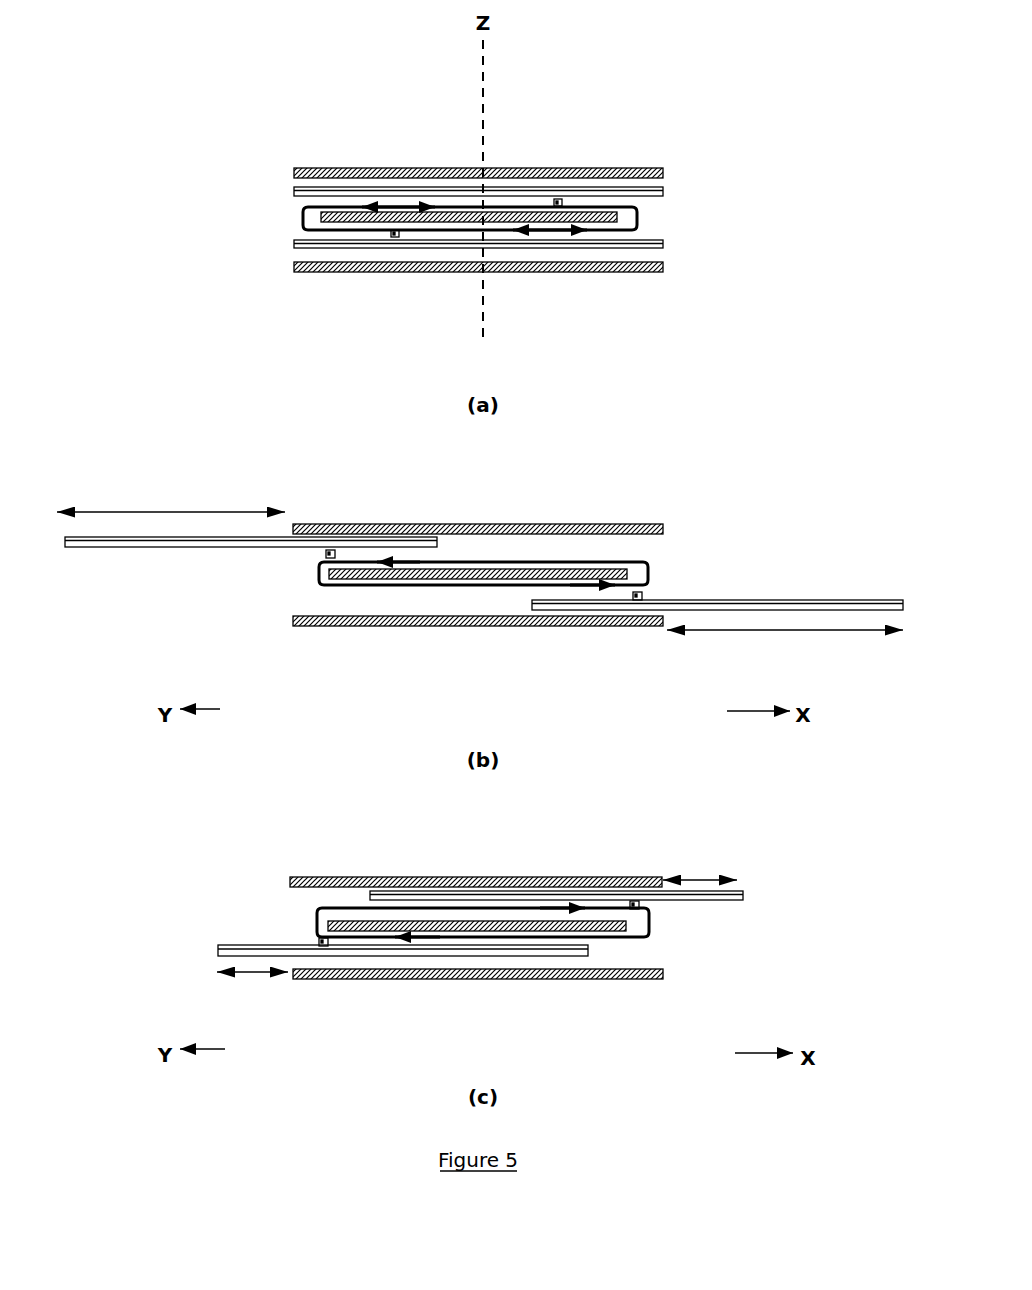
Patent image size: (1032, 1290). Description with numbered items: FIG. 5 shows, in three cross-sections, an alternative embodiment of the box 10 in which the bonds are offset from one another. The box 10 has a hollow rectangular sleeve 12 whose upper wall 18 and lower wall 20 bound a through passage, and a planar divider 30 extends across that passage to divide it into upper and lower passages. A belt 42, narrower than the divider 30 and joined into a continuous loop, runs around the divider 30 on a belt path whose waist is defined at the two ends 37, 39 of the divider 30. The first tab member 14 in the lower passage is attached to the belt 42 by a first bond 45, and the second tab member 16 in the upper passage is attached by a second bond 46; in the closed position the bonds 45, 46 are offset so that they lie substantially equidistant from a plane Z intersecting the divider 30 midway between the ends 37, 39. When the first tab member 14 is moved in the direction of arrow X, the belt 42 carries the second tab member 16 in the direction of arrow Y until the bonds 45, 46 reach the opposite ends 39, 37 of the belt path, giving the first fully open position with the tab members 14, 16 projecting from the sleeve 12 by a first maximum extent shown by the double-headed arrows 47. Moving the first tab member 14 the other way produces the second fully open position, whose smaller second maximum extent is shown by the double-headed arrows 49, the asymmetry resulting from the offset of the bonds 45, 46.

The box 10 is at (262, 158).
The sleeve 12 is at (662, 168).
The first tab member 14 is at (585, 248).
The second tab member 16 is at (294, 193).
The upper wall 18 is at (343, 168).
The lower wall 20 is at (336, 272).
The divider 30 is at (637, 226).
The end of divider 37 is at (303, 222).
The end of divider 39 is at (637, 210).
The belt 42 is at (303, 211).
The first bond 45 is at (397, 238).
The second bond 46 is at (558, 199).
The double-headed arrows 47 is at (107, 512).
The double-headed arrows 49 is at (697, 880).